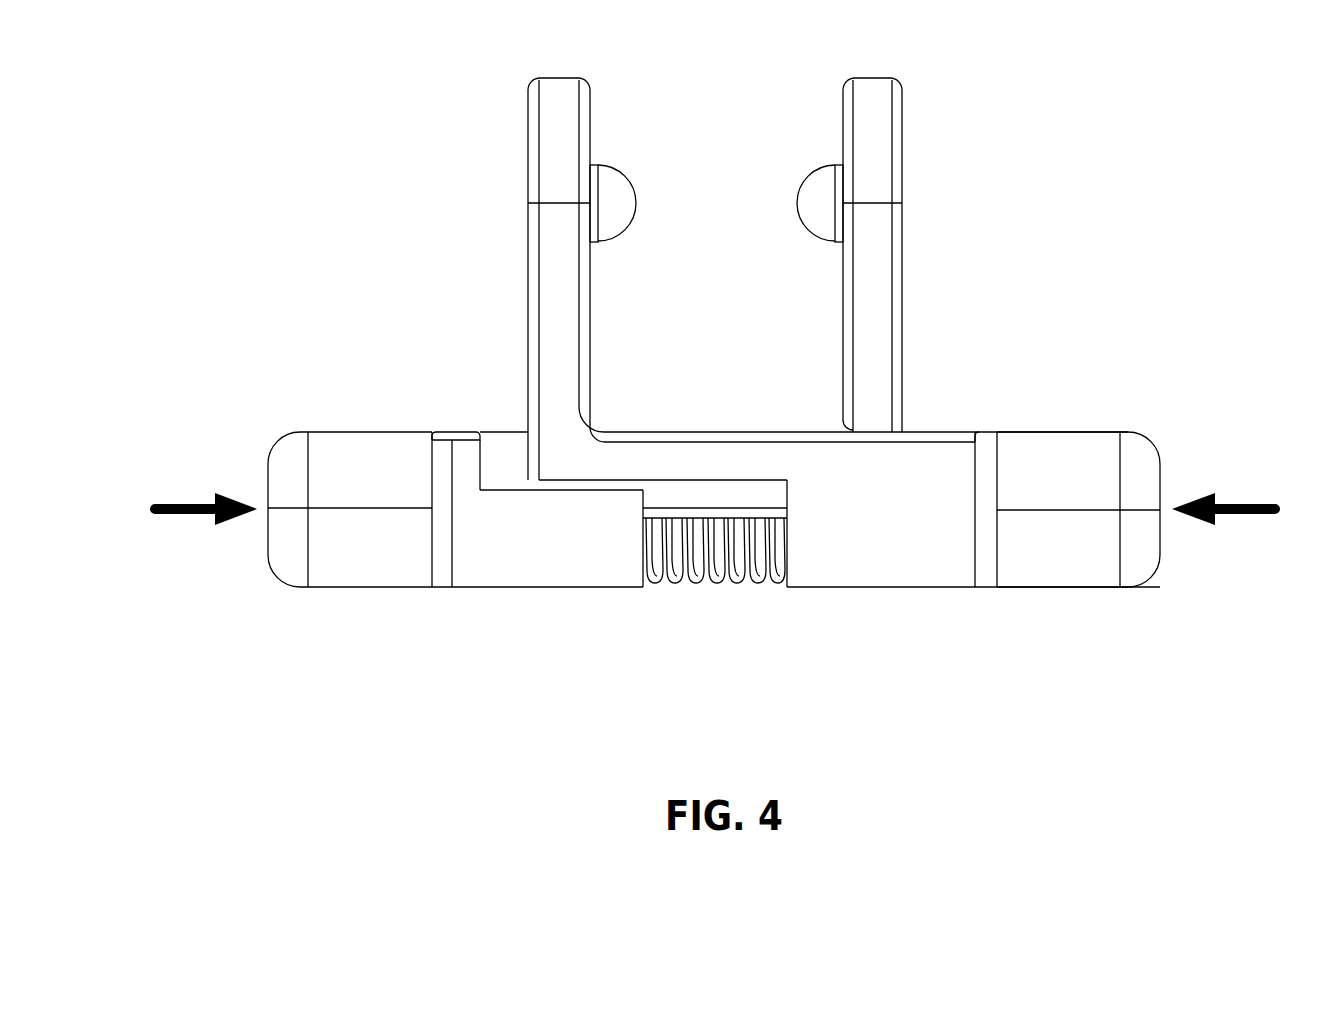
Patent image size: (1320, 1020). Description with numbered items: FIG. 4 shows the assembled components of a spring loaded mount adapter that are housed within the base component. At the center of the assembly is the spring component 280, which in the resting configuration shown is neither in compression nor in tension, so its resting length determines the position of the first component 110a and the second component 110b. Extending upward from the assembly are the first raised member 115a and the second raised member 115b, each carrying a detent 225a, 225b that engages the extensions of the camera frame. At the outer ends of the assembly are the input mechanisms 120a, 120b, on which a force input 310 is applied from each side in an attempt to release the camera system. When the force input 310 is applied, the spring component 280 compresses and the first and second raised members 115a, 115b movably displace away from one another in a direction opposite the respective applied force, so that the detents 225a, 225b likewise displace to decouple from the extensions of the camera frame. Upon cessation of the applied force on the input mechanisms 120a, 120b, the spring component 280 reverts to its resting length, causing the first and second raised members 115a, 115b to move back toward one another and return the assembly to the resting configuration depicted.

The first component 110a is at (505, 518).
The second component 110b is at (843, 484).
The first raised member 115a is at (915, 178).
The second raised member 115b is at (514, 180).
The input mechanism 120a is at (296, 545).
The input mechanism 120b is at (1133, 545).
The detent 225a is at (812, 180).
The detent 225b is at (616, 196).
The spring component 280 is at (731, 597).
The force input 310 is at (187, 486).